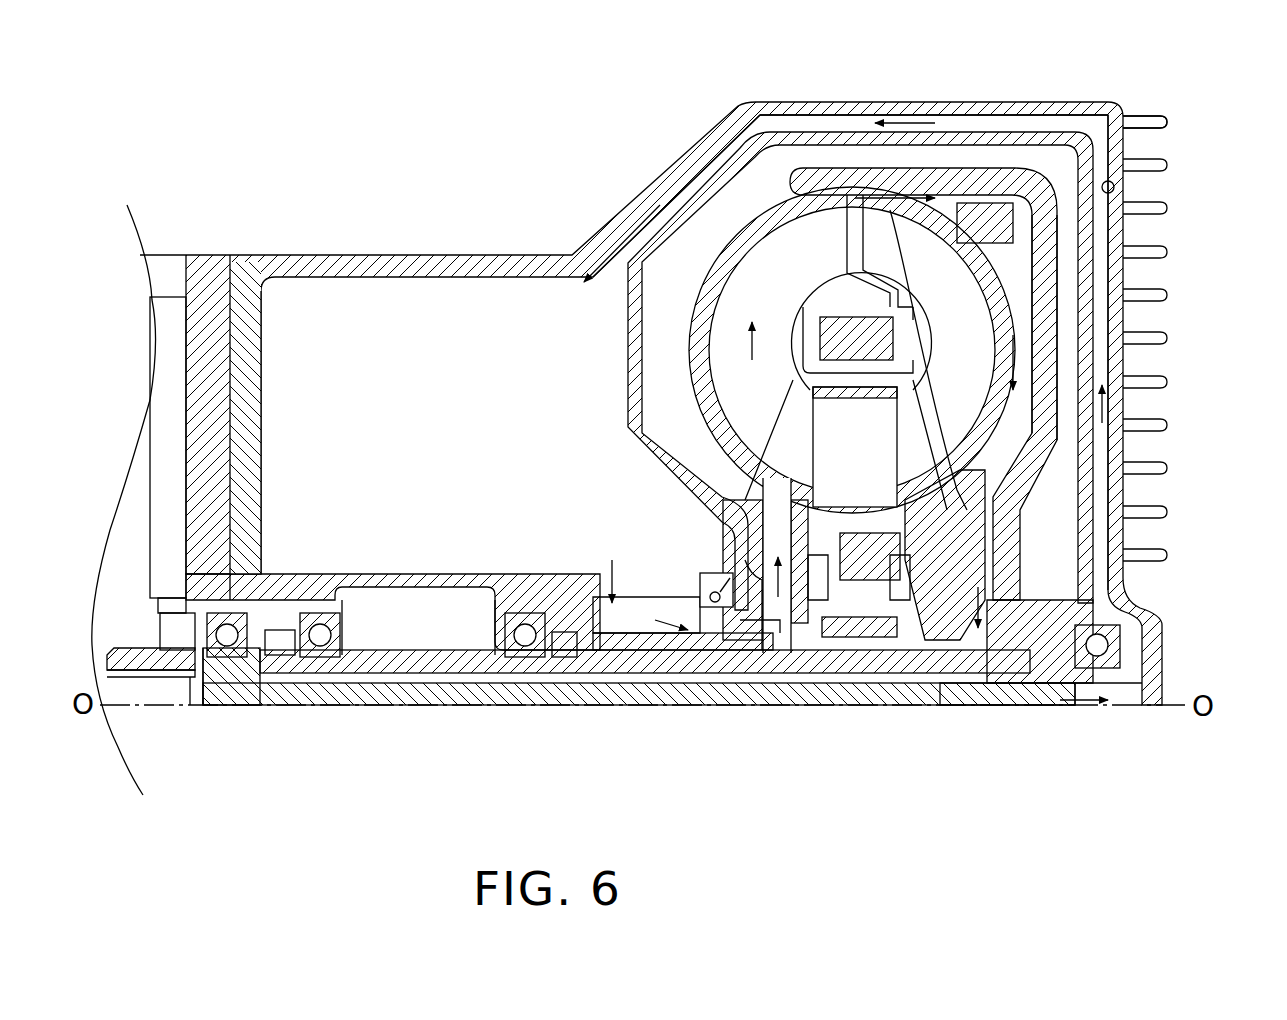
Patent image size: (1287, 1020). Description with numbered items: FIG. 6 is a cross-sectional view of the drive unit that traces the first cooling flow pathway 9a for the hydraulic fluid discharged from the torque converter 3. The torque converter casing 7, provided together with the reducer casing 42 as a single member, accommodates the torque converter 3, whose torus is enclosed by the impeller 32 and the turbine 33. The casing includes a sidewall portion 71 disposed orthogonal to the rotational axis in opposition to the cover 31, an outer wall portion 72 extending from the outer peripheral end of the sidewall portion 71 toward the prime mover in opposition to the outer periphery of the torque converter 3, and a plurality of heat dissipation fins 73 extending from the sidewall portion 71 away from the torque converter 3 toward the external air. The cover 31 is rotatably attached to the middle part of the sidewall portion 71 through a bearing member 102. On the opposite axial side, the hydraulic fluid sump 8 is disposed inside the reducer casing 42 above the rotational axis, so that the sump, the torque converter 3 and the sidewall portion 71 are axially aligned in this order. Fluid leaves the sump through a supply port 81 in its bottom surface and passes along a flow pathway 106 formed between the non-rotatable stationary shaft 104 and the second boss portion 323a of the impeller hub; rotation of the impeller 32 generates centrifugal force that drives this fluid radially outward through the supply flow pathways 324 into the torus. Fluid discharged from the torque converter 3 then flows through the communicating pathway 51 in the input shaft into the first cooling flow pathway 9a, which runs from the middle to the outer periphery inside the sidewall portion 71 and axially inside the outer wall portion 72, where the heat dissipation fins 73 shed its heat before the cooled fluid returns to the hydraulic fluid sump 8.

The reducer casing 42 is at (420, 255).
The hydraulic fluid sump 8 is at (455, 442).
The outer wall portion 72 is at (940, 102).
The impeller 32 is at (747, 217).
The torque converter casing 7 is at (1130, 95).
The sidewall portion 71 is at (1167, 232).
The heat dissipation fins 73 is at (1167, 122).
The first cooling flow pathway 9a is at (1115, 188).
The torque converter 3 is at (1038, 162).
The turbine 33 is at (1000, 335).
The cover 31 is at (1052, 362).
The supply port 81 is at (612, 560).
The bearing member 102 is at (1112, 655).
The communicating pathway 51 is at (985, 700).
The supply flow pathways 324 is at (760, 590).
The stationary shaft 104 is at (723, 642).
The flow pathway 106 is at (757, 630).
The second boss portion 323a is at (700, 600).